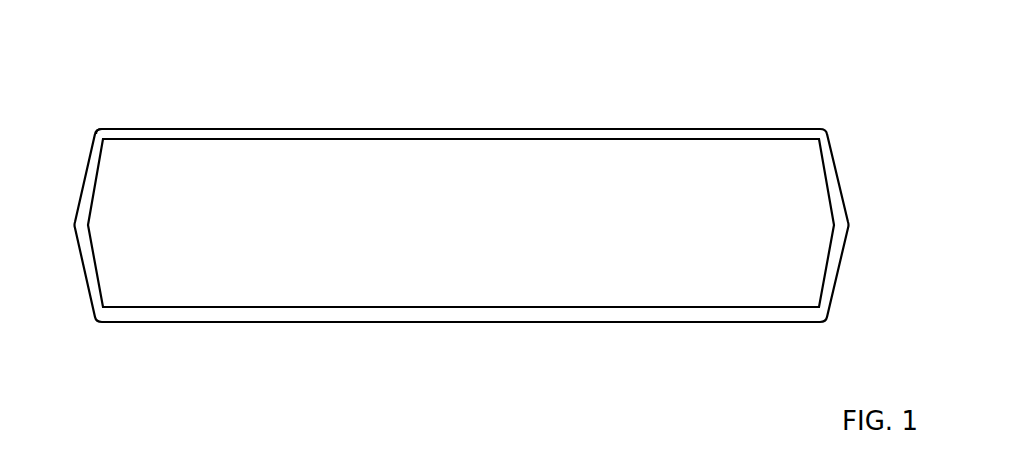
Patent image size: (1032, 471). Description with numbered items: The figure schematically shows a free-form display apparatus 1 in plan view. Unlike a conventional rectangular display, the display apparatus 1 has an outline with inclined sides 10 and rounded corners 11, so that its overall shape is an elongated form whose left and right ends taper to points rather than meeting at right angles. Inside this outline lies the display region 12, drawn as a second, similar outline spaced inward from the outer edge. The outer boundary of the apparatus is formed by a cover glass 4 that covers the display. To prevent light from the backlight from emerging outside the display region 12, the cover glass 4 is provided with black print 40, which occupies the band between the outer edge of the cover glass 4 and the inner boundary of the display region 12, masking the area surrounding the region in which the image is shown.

The free-form display apparatus 1 is at (423, 102).
The inclined sides 10 is at (842, 190).
The rounded corners 11 is at (97, 130).
The display region 12 is at (595, 153).
The cover glass 4 is at (460, 323).
The black print 40 is at (168, 313).